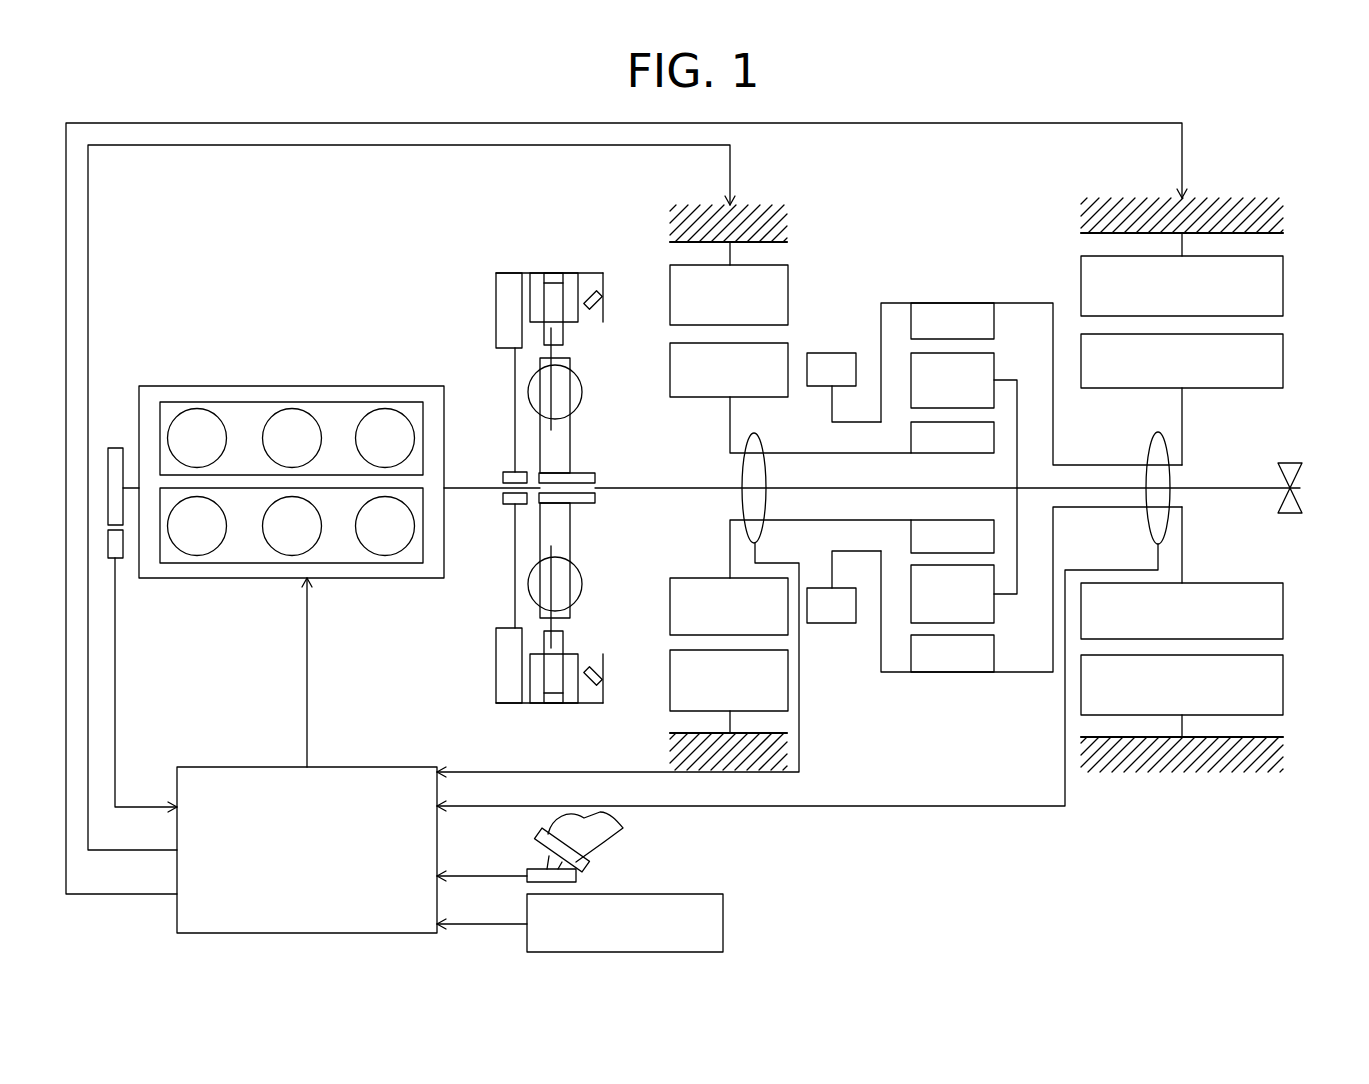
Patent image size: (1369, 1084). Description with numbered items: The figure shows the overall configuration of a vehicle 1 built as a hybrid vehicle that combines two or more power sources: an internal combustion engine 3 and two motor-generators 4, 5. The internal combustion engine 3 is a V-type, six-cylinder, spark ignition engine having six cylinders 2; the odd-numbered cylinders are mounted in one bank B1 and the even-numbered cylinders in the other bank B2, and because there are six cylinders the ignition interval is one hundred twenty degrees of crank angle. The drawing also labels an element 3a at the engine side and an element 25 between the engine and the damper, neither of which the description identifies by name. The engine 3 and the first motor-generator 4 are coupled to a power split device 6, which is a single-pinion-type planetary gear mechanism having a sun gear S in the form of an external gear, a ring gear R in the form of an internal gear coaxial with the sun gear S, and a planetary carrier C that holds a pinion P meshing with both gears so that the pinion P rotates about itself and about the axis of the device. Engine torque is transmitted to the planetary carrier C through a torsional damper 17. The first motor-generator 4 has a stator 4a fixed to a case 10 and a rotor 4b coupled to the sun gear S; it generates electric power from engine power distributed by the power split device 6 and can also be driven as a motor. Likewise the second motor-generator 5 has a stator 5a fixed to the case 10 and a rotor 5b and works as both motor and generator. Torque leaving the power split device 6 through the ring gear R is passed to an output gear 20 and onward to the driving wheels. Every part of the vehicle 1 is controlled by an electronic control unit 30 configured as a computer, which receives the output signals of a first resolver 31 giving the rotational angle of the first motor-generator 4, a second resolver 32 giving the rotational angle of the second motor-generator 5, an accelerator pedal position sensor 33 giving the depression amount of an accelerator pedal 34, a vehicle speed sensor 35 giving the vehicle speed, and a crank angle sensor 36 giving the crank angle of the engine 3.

The vehicle 1 is at (764, 169).
The cylinder 2 is at (187, 420).
The internal combustion engine 3 is at (282, 460).
The engine output shaft 3a is at (465, 482).
The bank B1 is at (271, 405).
The bank B2 is at (332, 563).
The first motor-generator 4 is at (759, 480).
The stator 4a is at (670, 302).
The rotor 4b is at (670, 372).
The second motor-generator 5 is at (1191, 480).
The stator 5a is at (1285, 287).
The rotor 5b is at (1285, 360).
The power split device 6 is at (1022, 445).
The case 10 is at (780, 248).
The torsional damper 17 is at (552, 272).
The output gear 20 is at (832, 352).
The input shaft 25 is at (618, 485).
The ring gear R is at (996, 320).
The pinion P is at (996, 358).
The sun gear S is at (909, 437).
The planetary carrier C is at (1015, 468).
The electronic control unit 30 is at (217, 765).
The first resolver 31 is at (742, 468).
The second resolver 32 is at (1172, 475).
The accelerator pedal position sensor 33 is at (577, 878).
The accelerator pedal 34 is at (535, 828).
The vehicle speed sensor 35 is at (725, 922).
The crank angle sensor 36 is at (122, 562).